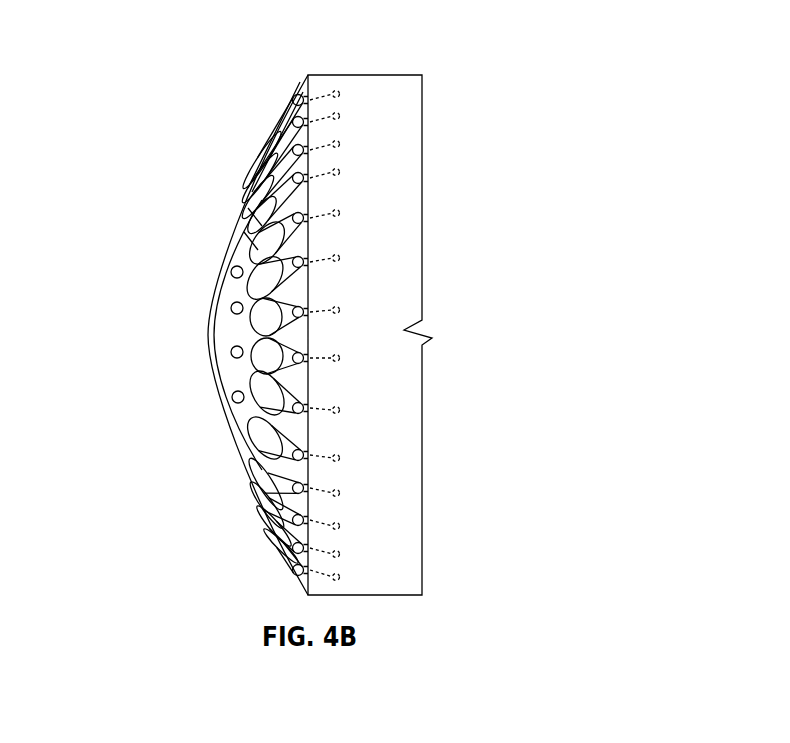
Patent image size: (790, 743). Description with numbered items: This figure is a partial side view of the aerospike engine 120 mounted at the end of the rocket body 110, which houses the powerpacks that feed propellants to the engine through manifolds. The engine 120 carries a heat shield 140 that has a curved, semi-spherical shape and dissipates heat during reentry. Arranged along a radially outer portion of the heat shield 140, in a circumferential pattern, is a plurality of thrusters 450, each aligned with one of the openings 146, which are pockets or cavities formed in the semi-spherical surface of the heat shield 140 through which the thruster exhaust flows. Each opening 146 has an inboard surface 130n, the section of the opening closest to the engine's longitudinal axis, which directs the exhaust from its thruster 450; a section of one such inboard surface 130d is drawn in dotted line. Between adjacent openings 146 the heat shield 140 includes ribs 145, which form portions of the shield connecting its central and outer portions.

The rocket body 110 is at (374, 100).
The aerospike engine 120 is at (123, 76).
The inboard surface 130d is at (284, 208).
The inboard surface 130n is at (262, 402).
The heat shield 140 is at (208, 315).
The ribs 145 is at (268, 342).
The openings 146 is at (252, 240).
The thrusters 450 is at (300, 566).